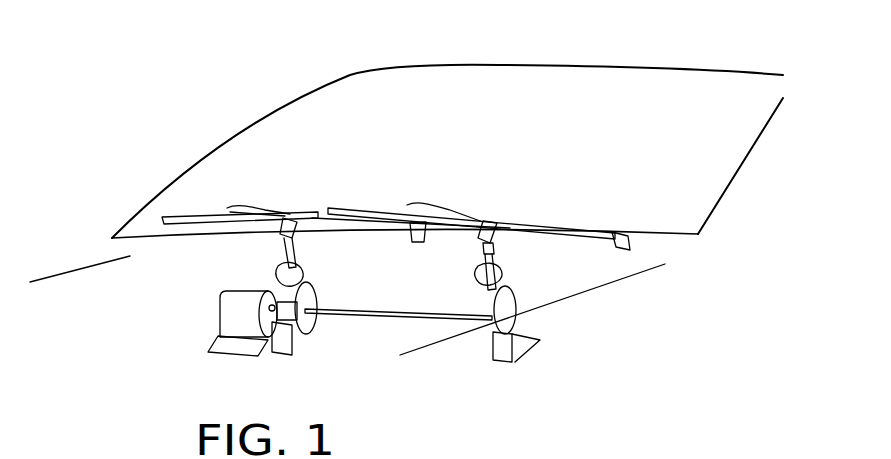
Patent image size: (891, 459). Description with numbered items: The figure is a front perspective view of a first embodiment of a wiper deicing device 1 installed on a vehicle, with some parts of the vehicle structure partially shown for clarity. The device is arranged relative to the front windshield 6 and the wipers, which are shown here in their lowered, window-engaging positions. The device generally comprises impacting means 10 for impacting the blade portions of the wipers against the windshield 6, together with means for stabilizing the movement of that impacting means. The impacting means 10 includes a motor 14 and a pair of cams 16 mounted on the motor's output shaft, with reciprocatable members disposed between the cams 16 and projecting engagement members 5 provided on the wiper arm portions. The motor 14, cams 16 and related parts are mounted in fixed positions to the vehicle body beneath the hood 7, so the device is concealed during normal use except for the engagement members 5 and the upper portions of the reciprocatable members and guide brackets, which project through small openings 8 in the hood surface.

The wiper deicing device 1 is at (212, 136).
The projecting engagement members 5 is at (492, 220).
The windshield 6 is at (707, 179).
The hood 7 is at (583, 268).
The openings in the hood surface 8 is at (497, 250).
The impacting means 10 is at (347, 352).
The motor 14 is at (233, 314).
The cams 16 is at (313, 290).